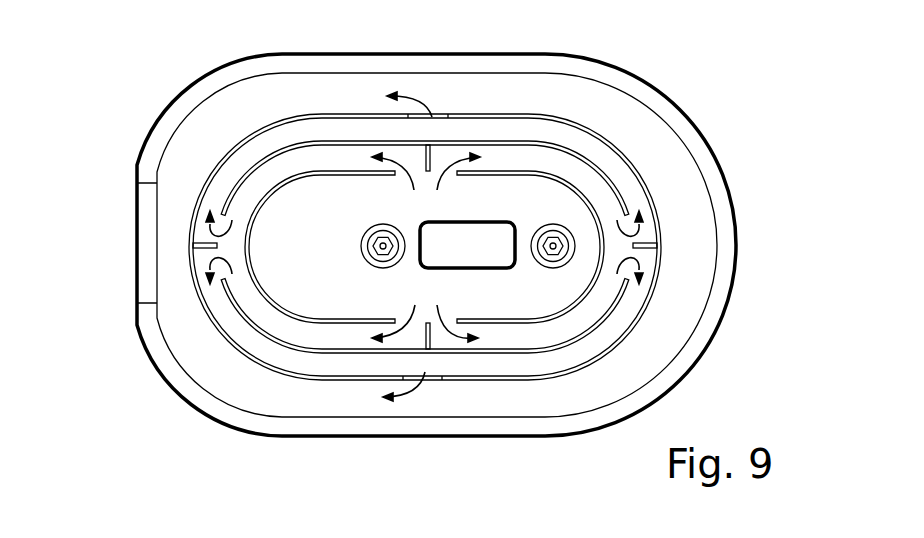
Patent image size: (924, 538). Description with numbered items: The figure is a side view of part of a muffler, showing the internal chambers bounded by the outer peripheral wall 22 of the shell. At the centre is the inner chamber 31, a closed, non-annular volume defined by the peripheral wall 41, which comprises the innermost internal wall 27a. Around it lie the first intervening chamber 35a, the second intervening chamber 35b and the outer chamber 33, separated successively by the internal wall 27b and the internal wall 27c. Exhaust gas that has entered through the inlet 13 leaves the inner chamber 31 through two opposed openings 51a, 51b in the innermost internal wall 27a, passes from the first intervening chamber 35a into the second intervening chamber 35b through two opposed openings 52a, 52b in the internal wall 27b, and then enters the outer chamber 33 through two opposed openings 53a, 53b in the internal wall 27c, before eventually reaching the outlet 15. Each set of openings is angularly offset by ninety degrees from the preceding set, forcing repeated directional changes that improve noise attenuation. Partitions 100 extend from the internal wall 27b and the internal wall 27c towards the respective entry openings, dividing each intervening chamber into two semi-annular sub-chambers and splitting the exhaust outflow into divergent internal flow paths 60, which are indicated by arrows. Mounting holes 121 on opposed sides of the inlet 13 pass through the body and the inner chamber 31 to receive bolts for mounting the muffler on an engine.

The inlet 13 is at (488, 257).
The outlet 15 is at (147, 246).
The outer peripheral wall 22 is at (717, 272).
The innermost internal wall 27a is at (268, 318).
The internal wall 27b is at (255, 327).
The internal wall 27c is at (218, 327).
The inner chamber 31 is at (563, 200).
The outer chamber 33 is at (527, 93).
The first intervening chamber 35a is at (577, 168).
The second intervening chamber 35b is at (567, 132).
The peripheral wall 41 is at (697, 359).
The opening 51a is at (415, 190).
The opening 51b is at (416, 327).
The opening 52a is at (200, 250).
The opening 52b is at (640, 254).
The opening 53a is at (430, 128).
The opening 53b is at (427, 368).
The internal flow paths 60 is at (460, 157).
The partitions 100 is at (442, 157).
The mounting holes 121 is at (556, 250).